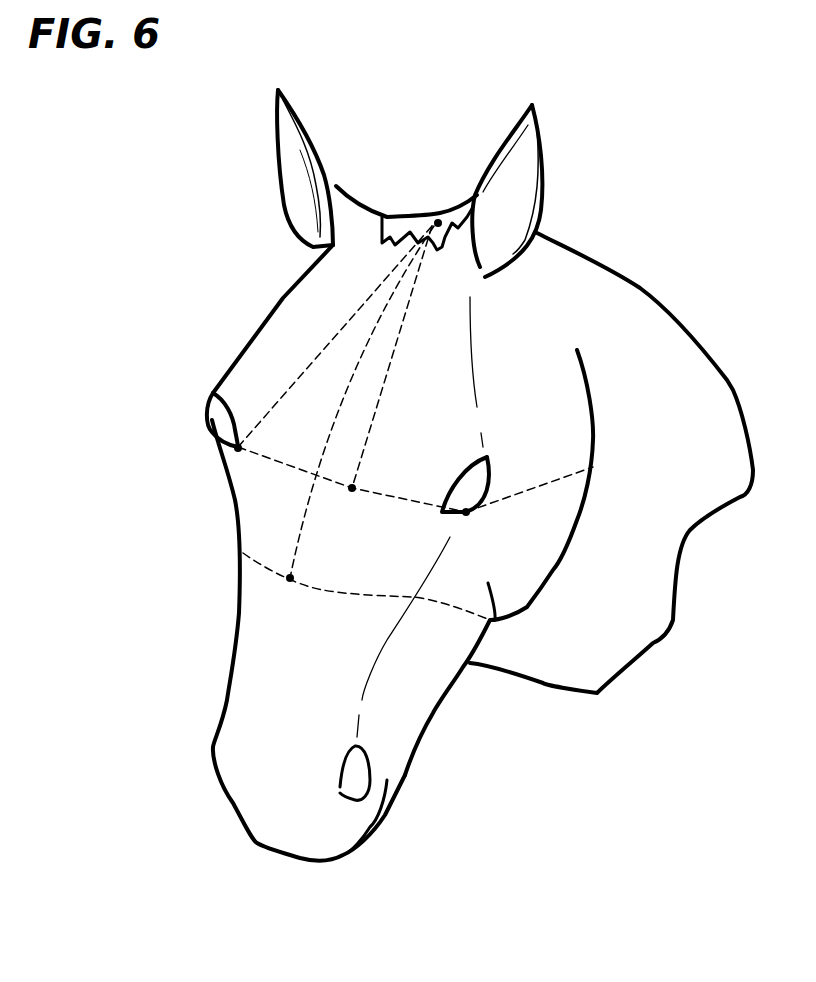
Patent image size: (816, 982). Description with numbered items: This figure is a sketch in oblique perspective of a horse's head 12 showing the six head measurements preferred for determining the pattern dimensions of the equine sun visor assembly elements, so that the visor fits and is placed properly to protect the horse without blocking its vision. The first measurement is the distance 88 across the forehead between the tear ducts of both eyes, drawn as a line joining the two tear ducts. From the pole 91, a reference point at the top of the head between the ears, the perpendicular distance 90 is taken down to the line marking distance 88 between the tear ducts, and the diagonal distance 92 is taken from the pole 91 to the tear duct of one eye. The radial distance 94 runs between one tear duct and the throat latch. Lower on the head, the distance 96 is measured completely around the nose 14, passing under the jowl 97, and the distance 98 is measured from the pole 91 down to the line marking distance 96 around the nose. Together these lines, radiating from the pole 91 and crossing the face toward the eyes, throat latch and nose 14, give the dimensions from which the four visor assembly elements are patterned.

The horse head outline 12 is at (633, 625).
The nose 14 is at (300, 760).
The distance across the forehead between the tear ducts 88 is at (392, 498).
The perpendicular distance from the pole to the tear-duct line 90 is at (388, 357).
The pole 91 is at (420, 213).
The diagonal distance from the pole to one eye tear duct 92 is at (307, 370).
The radial distance between one tear duct and the throat latch 94 is at (557, 480).
The distance around the nose under the jowl 96 is at (440, 603).
The jowl 97 is at (540, 553).
The distance from the pole to the nose circumference line 98 is at (305, 517).